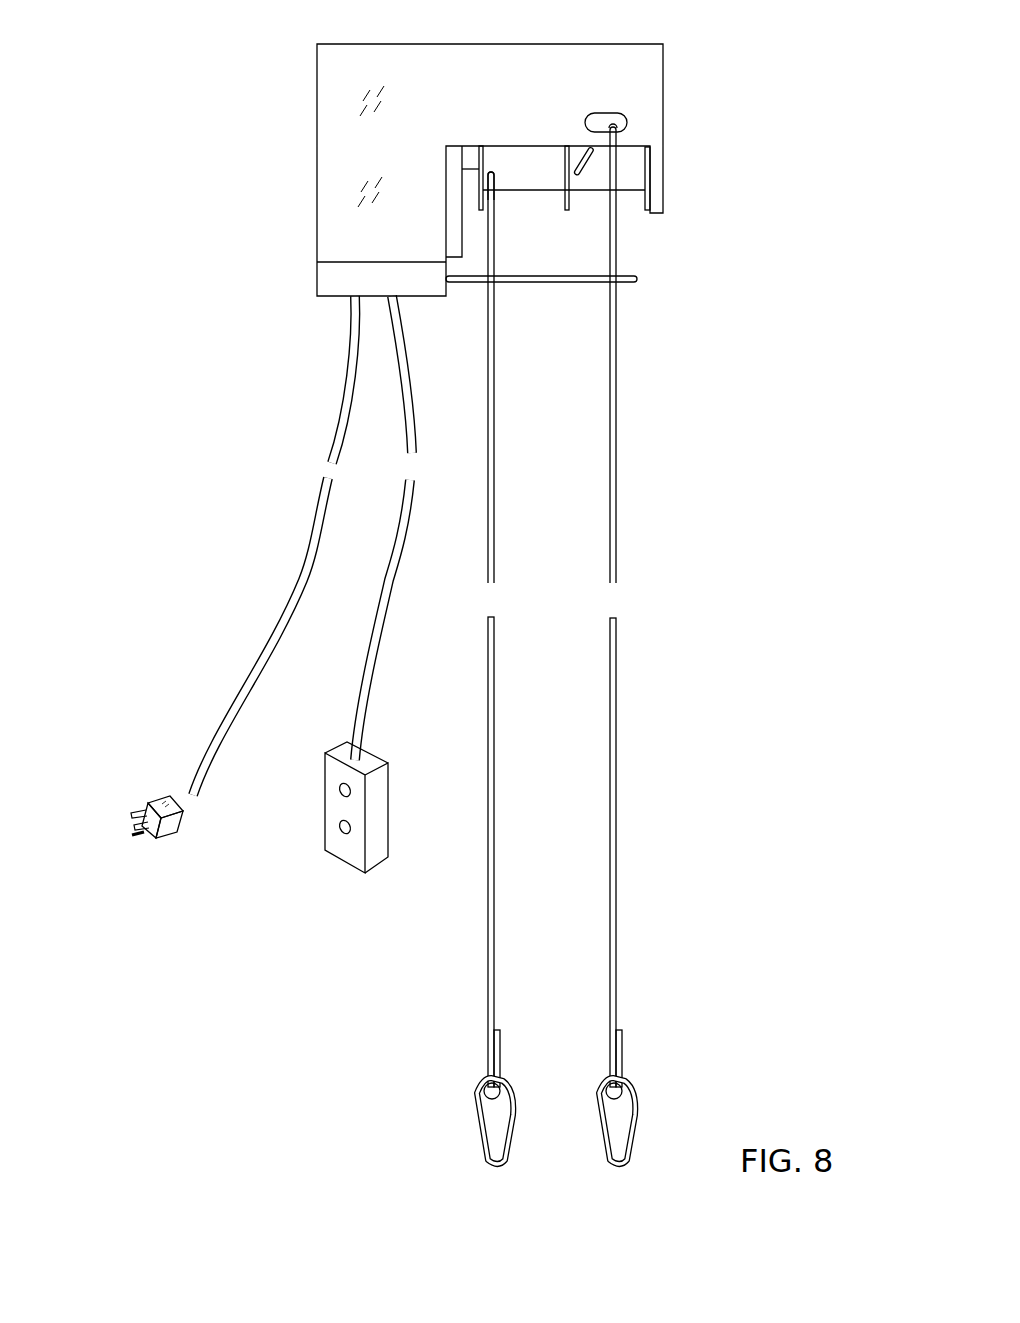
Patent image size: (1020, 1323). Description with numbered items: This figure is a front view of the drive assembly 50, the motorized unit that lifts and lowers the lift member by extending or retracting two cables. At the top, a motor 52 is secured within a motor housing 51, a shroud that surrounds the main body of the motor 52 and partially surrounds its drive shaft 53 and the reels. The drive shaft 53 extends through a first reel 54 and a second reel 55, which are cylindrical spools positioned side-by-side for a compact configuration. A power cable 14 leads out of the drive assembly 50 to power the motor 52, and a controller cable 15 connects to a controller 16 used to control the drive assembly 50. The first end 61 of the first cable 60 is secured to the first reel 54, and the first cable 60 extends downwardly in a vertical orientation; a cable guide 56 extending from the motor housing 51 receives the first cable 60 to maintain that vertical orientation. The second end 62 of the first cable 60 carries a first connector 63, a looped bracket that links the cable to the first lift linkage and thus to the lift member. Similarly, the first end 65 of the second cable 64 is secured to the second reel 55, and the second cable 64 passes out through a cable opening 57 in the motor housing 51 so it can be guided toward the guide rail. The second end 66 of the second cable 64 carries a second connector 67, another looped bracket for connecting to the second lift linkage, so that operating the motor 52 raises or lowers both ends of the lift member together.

The power cable 14 is at (273, 630).
The controller cable 15 is at (345, 708).
The controller 16 is at (323, 820).
The drive assembly 50 is at (305, 202).
The motor housing 51 is at (372, 145).
The motor 52 is at (462, 242).
The drive shaft 53 is at (472, 172).
The first reel 54 is at (527, 165).
The second reel 55 is at (635, 167).
The cable guide 56 is at (640, 280).
The cable opening 57 is at (623, 115).
The first cable 60 is at (487, 873).
The first end of the first cable 61 is at (495, 180).
The second end of the first cable 62 is at (500, 1057).
The first connector 63 is at (480, 1133).
The second cable 64 is at (617, 685).
The first end of the second cable 65 is at (593, 182).
The second end of the second cable 66 is at (622, 1057).
The second connector 67 is at (638, 1137).